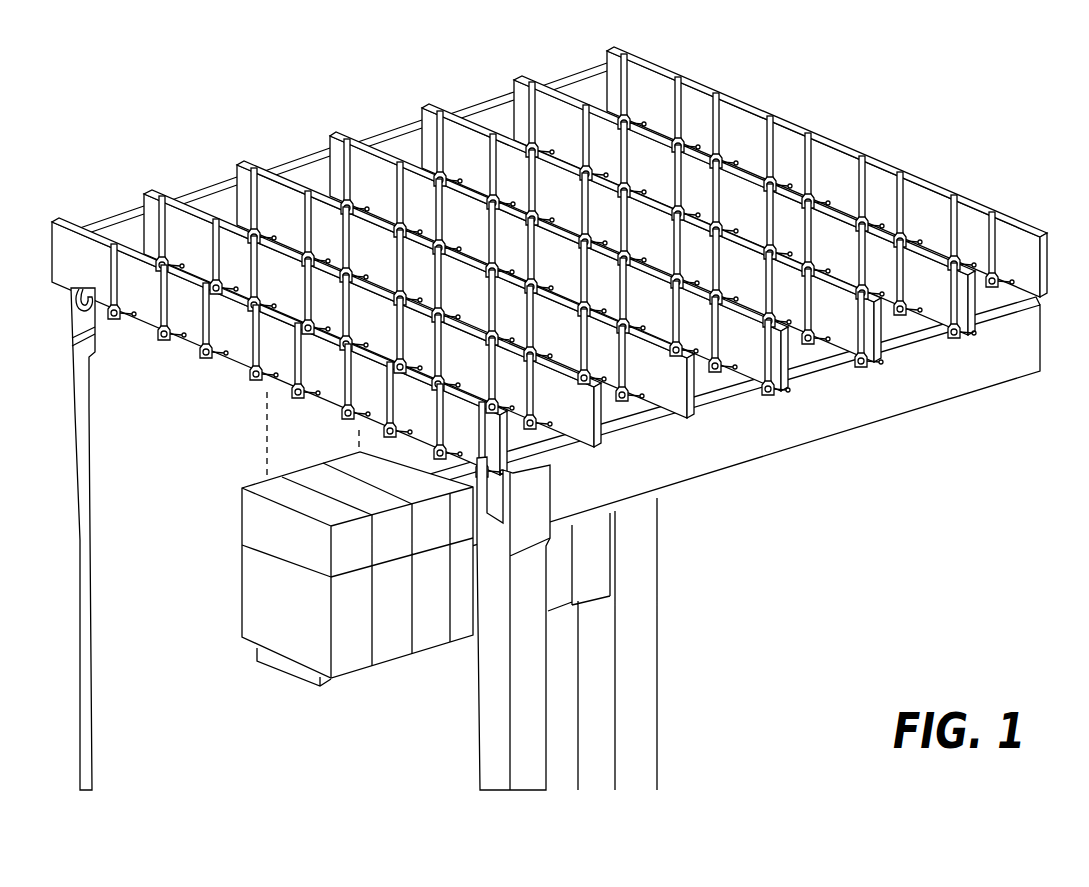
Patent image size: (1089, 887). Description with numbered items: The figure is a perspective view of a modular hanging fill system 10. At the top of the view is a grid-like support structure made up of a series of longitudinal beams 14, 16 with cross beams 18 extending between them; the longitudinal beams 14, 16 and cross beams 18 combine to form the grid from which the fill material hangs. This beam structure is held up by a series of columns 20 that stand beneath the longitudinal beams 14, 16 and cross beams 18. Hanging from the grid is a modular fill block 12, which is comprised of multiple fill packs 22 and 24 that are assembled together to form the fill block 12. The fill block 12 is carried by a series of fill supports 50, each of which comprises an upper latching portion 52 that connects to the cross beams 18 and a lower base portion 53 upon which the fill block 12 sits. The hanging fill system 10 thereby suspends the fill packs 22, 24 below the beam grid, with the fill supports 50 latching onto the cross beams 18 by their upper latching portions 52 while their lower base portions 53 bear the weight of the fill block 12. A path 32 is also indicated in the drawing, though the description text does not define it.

The modular hanging fill system 10 is at (549, 415).
The modular fill block 12 is at (321, 565).
The longitudinal beam 14 is at (833, 440).
The longitudinal beam 16 is at (397, 128).
The cross beam 18 is at (152, 193).
The column 20 is at (658, 598).
The fill pack 22 is at (394, 605).
The fill pack 24 is at (357, 520).
The lift path 32 is at (260, 446).
The fill support 50 is at (213, 437).
The upper latching portion 52 is at (258, 377).
The lower base portion 53 is at (290, 681).